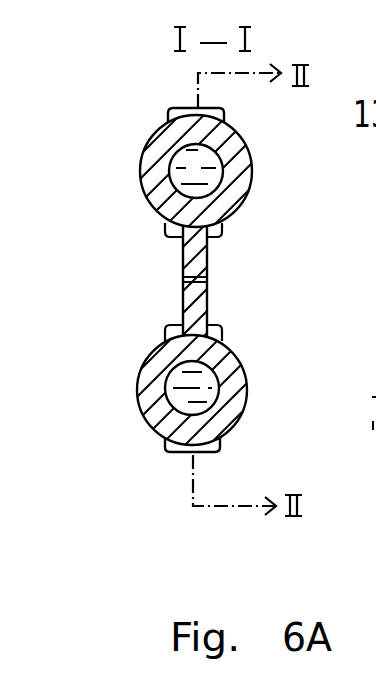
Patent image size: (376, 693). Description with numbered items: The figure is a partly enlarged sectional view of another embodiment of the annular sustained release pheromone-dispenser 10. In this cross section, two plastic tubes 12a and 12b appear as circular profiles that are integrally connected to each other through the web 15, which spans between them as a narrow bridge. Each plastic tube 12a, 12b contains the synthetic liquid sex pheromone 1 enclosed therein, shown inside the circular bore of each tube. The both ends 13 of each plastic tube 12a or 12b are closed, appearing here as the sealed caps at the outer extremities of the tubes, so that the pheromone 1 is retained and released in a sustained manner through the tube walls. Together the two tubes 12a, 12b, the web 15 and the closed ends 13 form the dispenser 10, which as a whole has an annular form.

The synthetic liquid sex pheromone 1 is at (212, 177).
The annular sustained release pheromone-dispenser 10 is at (276, 377).
The plastic tube 12a is at (156, 177).
The plastic tube 12b is at (164, 366).
The ends of the plastic tube 13 is at (216, 117).
The web 15 is at (189, 292).